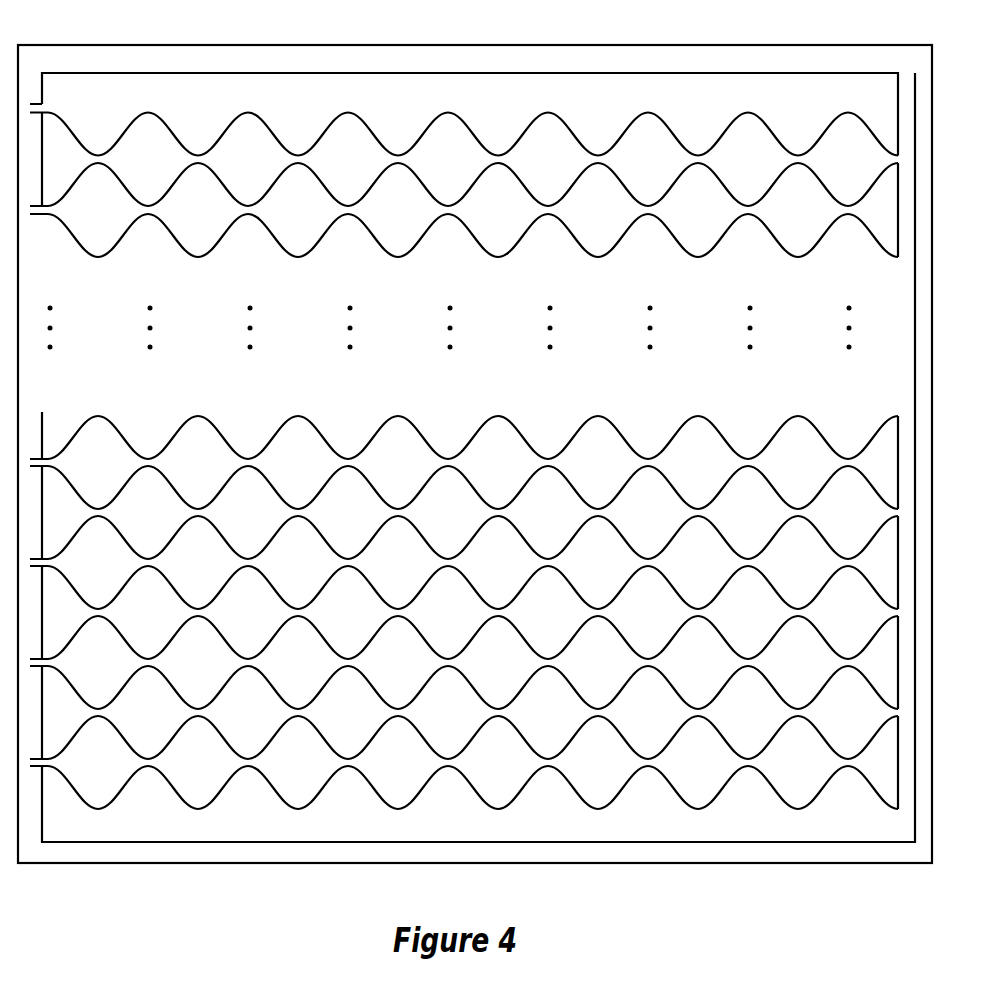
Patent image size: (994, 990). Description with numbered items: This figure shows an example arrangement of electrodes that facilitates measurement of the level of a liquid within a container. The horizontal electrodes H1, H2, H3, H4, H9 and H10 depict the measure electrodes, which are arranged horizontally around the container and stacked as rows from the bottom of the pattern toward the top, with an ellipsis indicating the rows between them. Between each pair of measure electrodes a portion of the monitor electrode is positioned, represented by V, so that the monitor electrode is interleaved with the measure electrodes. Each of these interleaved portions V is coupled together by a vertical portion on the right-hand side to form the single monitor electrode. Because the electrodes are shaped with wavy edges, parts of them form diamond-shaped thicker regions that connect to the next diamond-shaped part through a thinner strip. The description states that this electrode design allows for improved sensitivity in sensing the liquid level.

The horizontal electrode H1 is at (464, 762).
The horizontal electrode H2 is at (464, 662).
The horizontal electrode H3 is at (464, 562).
The horizontal electrode H4 is at (464, 462).
The horizontal electrode H9 is at (464, 210).
The horizontal electrode H10 is at (464, 124).
The monitor electrode portion V is at (453, 485).